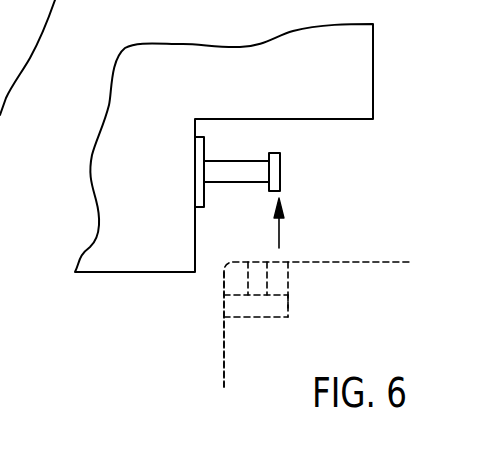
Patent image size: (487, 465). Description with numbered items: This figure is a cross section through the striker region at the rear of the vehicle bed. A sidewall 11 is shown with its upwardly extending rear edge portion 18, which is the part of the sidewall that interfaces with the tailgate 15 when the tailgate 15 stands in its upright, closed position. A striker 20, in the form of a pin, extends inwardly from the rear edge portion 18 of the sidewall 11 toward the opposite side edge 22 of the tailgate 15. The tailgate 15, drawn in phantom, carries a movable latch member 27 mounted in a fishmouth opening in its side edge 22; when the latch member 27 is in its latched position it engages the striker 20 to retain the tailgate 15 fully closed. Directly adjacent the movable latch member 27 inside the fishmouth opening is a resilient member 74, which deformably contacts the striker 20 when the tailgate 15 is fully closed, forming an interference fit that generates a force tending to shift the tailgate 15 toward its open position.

The sidewall 11 is at (373, 69).
The rear edge portion 18 is at (283, 138).
The striker 20 is at (275, 172).
The tailgate 15 is at (280, 295).
The movable latch member 27 is at (233, 288).
The side edge 22 is at (220, 295).
The resilient member 74 is at (288, 312).